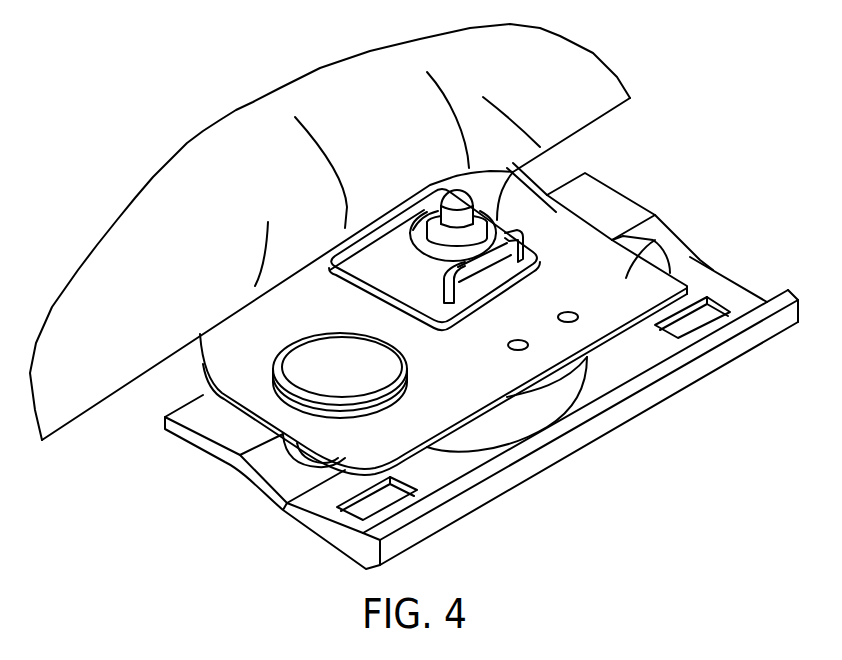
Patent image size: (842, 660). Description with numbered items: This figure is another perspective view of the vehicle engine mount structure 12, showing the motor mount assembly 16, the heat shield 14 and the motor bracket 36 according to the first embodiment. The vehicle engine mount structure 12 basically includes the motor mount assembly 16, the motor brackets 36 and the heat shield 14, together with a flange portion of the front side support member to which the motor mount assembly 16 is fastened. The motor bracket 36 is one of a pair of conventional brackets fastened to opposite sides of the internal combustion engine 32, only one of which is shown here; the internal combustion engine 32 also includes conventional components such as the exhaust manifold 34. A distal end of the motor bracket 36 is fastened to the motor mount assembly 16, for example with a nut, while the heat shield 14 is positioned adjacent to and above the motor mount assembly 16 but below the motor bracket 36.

The vehicle engine mount structure 12 is at (621, 187).
The heat shield 14 is at (623, 236).
The motor mount assembly 16 is at (730, 295).
The internal combustion engine 32 is at (236, 116).
The exhaust manifold 34 is at (557, 70).
The motor bracket 36 is at (527, 171).